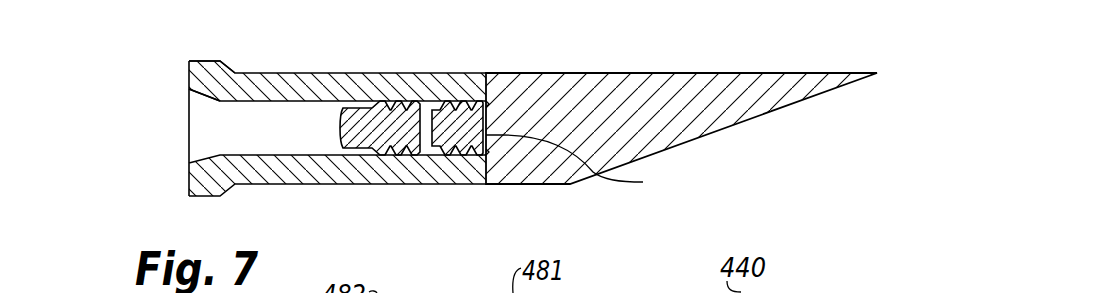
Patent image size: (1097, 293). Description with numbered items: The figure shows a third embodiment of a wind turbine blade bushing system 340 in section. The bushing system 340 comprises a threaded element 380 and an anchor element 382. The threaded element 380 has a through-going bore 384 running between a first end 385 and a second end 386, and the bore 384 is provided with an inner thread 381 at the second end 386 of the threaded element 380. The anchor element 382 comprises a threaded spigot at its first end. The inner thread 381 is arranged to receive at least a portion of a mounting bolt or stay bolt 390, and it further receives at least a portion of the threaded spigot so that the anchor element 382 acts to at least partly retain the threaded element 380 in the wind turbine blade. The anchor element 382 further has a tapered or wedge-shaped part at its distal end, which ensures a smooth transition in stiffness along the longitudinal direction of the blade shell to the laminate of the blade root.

The wind turbine blade bushing system 340 is at (678, 58).
The threaded element 380 is at (368, 64).
The inner thread 381 is at (487, 110).
The anchor element 382 is at (642, 64).
The through-going bore 384 is at (188, 130).
The first end 385 is at (188, 152).
The second end 386 is at (643, 182).
The stay bolt 390 is at (357, 120).